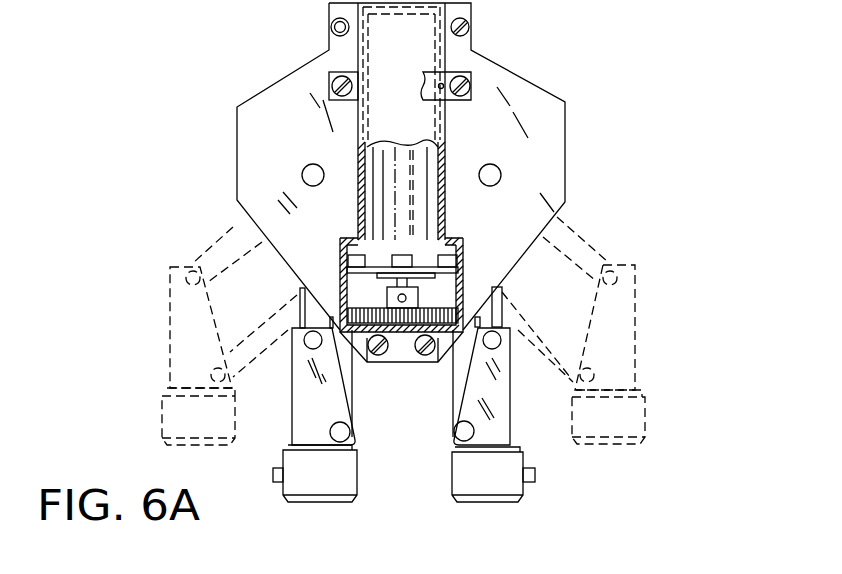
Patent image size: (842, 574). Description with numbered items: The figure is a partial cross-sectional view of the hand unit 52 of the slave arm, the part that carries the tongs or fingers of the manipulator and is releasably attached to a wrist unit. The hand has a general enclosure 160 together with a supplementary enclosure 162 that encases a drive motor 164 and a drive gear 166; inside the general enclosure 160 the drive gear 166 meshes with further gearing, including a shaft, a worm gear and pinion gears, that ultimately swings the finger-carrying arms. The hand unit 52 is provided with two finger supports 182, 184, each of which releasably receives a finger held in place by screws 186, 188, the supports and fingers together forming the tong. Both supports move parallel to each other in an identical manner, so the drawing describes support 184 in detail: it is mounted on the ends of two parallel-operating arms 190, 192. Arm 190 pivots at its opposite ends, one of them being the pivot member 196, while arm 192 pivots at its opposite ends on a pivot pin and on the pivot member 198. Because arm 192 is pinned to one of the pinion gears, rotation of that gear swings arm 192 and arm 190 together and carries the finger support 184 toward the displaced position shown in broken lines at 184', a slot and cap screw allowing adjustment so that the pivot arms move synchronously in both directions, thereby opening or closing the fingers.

The hand unit 52 is at (200, 107).
The general enclosure 160 is at (510, 70).
The supplementary enclosure 162 is at (446, 158).
The drive motor 164 is at (359, 164).
The drive gear 166 is at (363, 307).
The finger support 182 is at (284, 455).
The finger support 184 is at (470, 499).
The position of finger support 184' is at (437, 331).
The screw 186 is at (272, 474).
The screw 188 is at (536, 474).
The arm 190 is at (453, 390).
The arm 192 is at (500, 306).
The pivot member 196 is at (454, 437).
The pivot member 198 is at (494, 341).